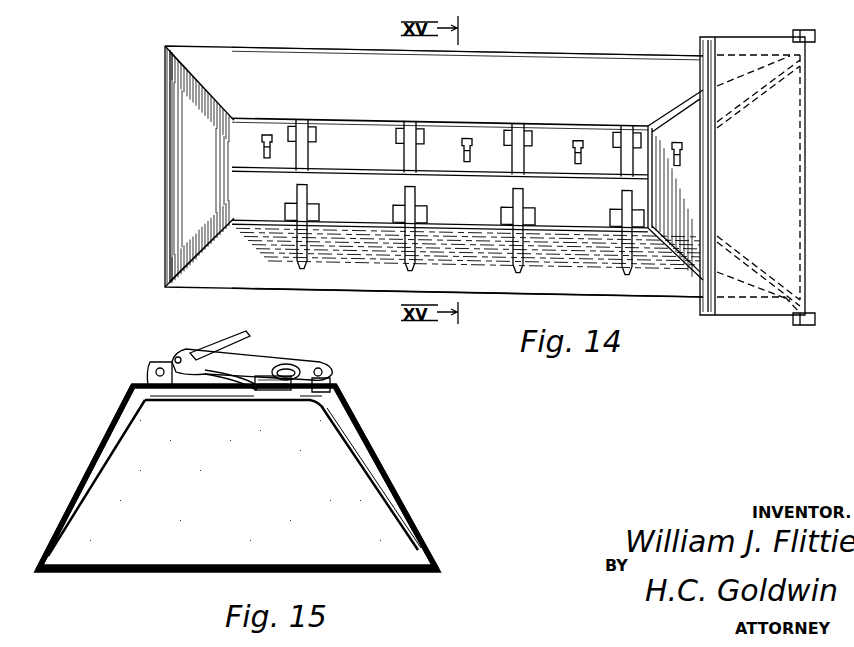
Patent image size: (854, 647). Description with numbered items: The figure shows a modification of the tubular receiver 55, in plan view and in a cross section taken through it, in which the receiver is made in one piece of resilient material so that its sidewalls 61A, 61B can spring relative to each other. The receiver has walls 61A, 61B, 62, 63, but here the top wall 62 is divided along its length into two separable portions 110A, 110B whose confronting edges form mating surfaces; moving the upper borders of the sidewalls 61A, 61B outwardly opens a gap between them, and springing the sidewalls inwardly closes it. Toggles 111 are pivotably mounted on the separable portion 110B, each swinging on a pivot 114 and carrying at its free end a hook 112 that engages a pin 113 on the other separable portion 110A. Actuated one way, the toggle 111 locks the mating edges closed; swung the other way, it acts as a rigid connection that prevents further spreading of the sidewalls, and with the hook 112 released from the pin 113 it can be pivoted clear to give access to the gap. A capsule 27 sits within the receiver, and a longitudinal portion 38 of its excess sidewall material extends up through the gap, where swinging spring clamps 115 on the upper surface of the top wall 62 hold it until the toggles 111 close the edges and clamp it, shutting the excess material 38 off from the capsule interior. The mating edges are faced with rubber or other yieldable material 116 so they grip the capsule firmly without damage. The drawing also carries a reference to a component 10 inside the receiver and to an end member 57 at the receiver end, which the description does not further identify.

In FIG. 15, the bucket body 10 is at (232, 501).
In FIG. 15, the capsule 27 is at (354, 474).
In FIG. 15, the excess material portion of the capsule 38 is at (268, 374).
In FIG. 14, the receiver 55 is at (158, 171).
In FIG. 15, the receiver 55 is at (112, 411).
In FIG. 14, the side plate 57 is at (771, 189).
In FIG. 14, the sidewall 61A is at (492, 274).
In FIG. 15, the sidewall 61A is at (400, 484).
In FIG. 14, the sidewall 61B is at (494, 94).
In FIG. 15, the sidewall 61B is at (88, 470).
In FIG. 14, the top wall 62 is at (348, 113).
In FIG. 15, the wall 63 is at (180, 576).
In FIG. 14, the separable portion 110A is at (383, 201).
In FIG. 15, the separable portion 110A is at (300, 392).
In FIG. 14, the separable portion 110B is at (383, 159).
In FIG. 15, the separable portion 110B is at (206, 397).
In FIG. 14, the toggle 111 is at (530, 158).
In FIG. 15, the toggle 111 is at (201, 343).
In FIG. 15, the hook 112 is at (331, 380).
In FIG. 15, the pin 113 is at (322, 366).
In FIG. 15, the pivot 114 is at (156, 370).
In FIG. 15, the spring clamp 115 is at (291, 366).
In FIG. 15, the yieldable facing 116 is at (236, 384).